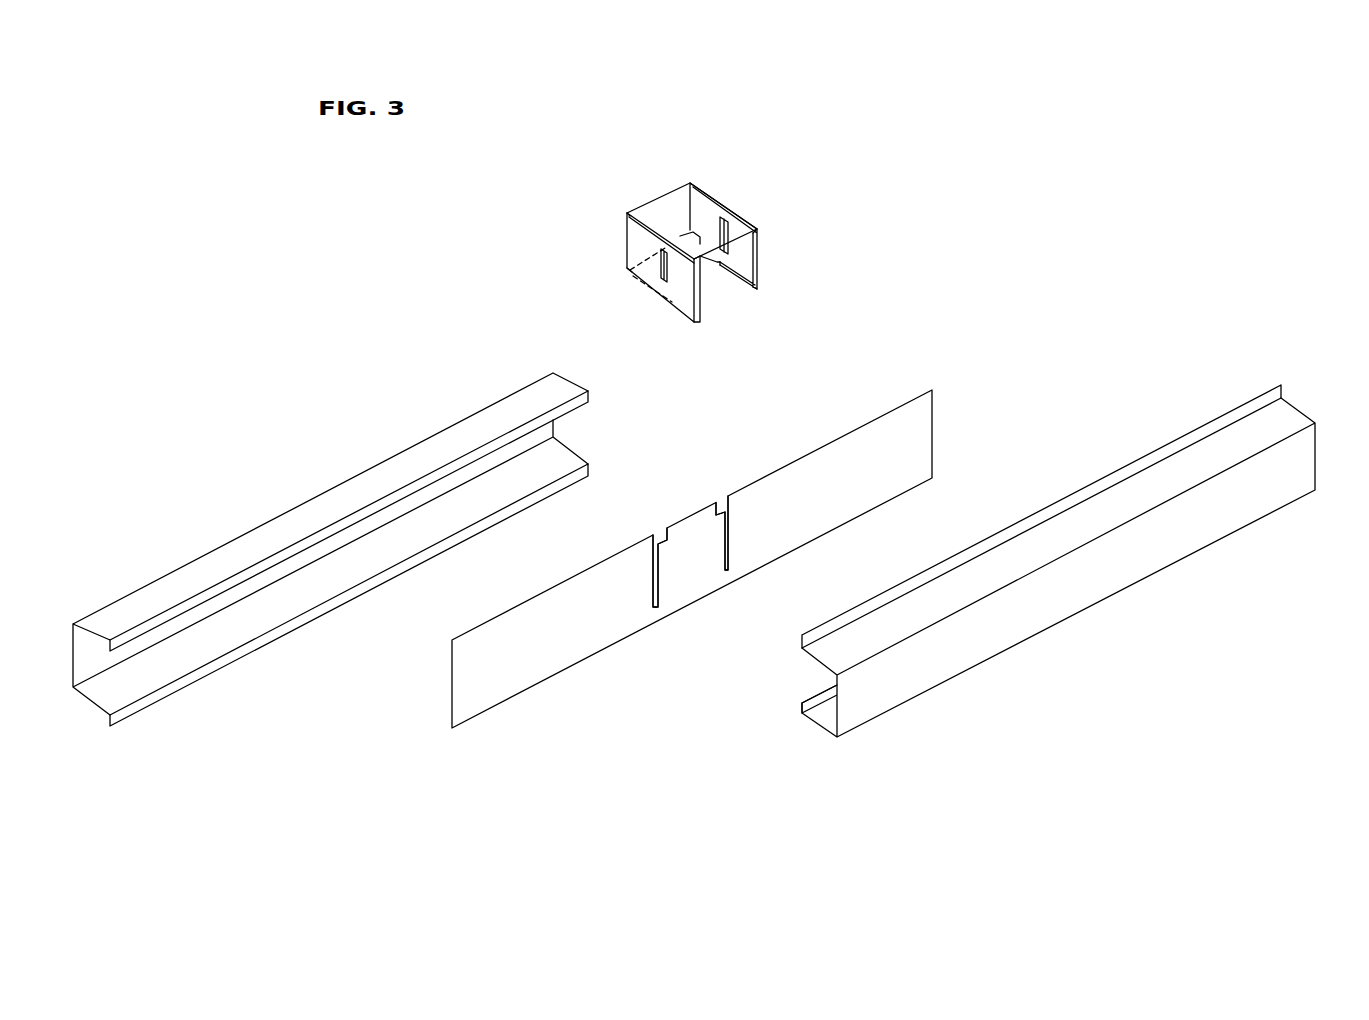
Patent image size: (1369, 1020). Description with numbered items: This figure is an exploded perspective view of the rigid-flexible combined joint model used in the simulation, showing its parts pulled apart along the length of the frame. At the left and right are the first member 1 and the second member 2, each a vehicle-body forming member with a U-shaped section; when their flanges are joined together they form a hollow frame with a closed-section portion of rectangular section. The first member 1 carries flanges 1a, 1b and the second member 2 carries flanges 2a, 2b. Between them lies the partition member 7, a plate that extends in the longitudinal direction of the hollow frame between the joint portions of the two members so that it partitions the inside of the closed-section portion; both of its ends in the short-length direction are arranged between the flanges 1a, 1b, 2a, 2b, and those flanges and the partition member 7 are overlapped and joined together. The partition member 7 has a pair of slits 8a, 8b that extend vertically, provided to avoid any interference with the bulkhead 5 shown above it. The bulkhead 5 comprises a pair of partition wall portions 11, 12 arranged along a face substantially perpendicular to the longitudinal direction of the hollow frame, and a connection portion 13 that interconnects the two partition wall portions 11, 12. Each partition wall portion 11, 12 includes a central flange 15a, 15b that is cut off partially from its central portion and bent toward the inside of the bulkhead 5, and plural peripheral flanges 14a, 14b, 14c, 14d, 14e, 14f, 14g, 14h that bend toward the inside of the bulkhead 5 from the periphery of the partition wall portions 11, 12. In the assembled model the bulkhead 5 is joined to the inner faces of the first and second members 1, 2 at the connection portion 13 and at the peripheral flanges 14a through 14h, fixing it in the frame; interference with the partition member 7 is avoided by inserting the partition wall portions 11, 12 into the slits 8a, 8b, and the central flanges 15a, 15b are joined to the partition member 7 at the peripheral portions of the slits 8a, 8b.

The first member 1 is at (1057, 593).
The flange of first member 1a is at (1126, 467).
The flange of first member 1b is at (802, 719).
The second member 2 is at (330, 549).
The flange of second member 2a is at (405, 489).
The flange of second member 2b is at (288, 634).
The bulkhead 5 is at (687, 240).
The partition member 7 is at (692, 524).
The slit 8a is at (652, 590).
The slit 8b is at (729, 546).
The partition wall portion 11 is at (687, 258).
The partition wall portion 12 is at (635, 302).
The connection portion 13 is at (663, 208).
The peripheral flange 14a is at (766, 254).
The peripheral flange 14b is at (629, 215).
The peripheral flange 14c is at (738, 293).
The peripheral flange 14d is at (670, 308).
The peripheral flange 14e is at (711, 268).
The peripheral flange 14f is at (626, 282).
The peripheral flange 14g is at (764, 267).
The peripheral flange 14h is at (707, 312).
The central flange 15a is at (721, 237).
The central flange 15b is at (657, 297).